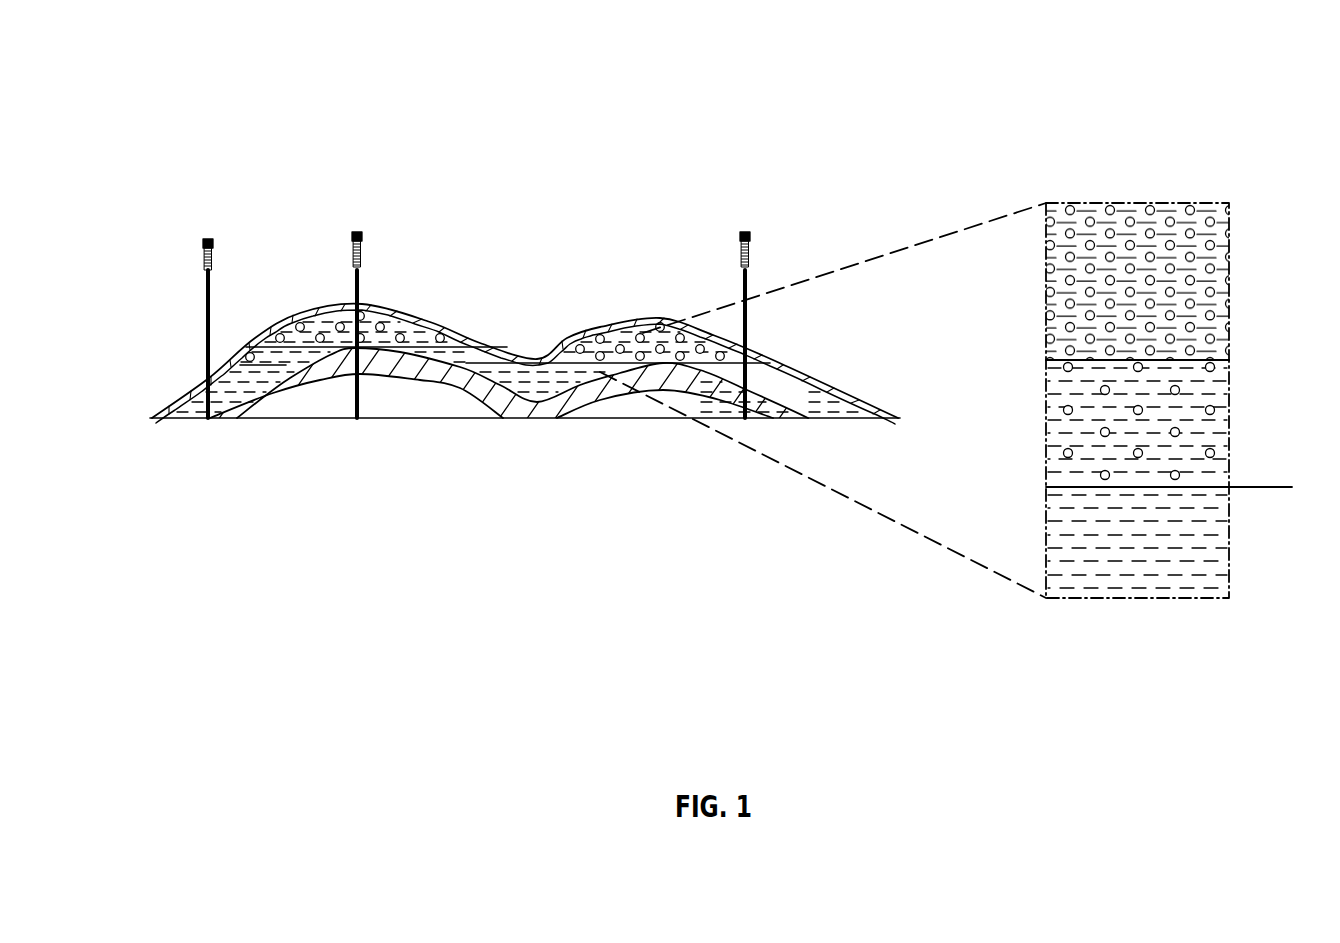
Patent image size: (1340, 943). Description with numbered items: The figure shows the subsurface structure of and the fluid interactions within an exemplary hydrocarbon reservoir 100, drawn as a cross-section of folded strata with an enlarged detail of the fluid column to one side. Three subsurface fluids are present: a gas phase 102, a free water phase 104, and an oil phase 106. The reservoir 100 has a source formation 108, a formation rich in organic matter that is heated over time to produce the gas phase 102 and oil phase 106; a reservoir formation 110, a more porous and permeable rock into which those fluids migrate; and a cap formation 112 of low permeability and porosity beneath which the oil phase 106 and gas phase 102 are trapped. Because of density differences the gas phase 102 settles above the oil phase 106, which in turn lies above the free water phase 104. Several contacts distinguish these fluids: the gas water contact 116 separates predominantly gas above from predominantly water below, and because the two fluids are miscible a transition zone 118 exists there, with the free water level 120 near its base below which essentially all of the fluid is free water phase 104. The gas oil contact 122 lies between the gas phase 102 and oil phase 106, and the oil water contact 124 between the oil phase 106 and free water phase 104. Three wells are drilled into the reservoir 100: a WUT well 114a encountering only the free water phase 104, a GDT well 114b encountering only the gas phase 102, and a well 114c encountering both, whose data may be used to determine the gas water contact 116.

The hydrocarbon reservoir 100 is at (199, 87).
The gas phase 102 is at (403, 312).
The free water phase 104 is at (857, 400).
The oil phase 106 is at (500, 353).
The source formation 108 is at (550, 410).
The reservoir formation 110 is at (190, 421).
The cap formation 112 is at (327, 305).
The WUT (water up to) well 114a is at (209, 236).
The GDT (gas down to) well 114b is at (357, 230).
The GWC well 114c is at (746, 230).
The gas water contact (GWC) 116 is at (772, 357).
The transition zone 118 is at (1231, 358).
The free water level (FWL) 120 is at (1277, 488).
The gas oil contact (GOC) 122 is at (259, 341).
The oil water contact (OWC) 124 is at (258, 366).